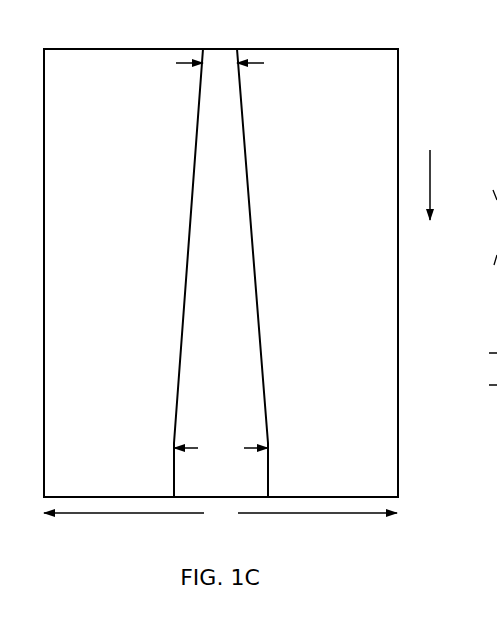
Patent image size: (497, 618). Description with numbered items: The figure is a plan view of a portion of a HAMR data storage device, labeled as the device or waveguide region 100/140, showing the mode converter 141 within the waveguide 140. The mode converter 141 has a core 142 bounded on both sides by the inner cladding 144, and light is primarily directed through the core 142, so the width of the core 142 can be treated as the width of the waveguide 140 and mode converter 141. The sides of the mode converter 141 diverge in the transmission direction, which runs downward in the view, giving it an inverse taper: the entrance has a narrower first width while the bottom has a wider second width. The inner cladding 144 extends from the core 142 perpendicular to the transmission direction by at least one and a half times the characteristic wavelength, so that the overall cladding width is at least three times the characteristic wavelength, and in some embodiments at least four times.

The optical fiber 100 is at (270, 273).
The waveguide 140 is at (177, 28).
The mode converter 141 is at (403, 389).
The core 142 is at (221, 273).
The inner cladding 144 is at (221, 273).